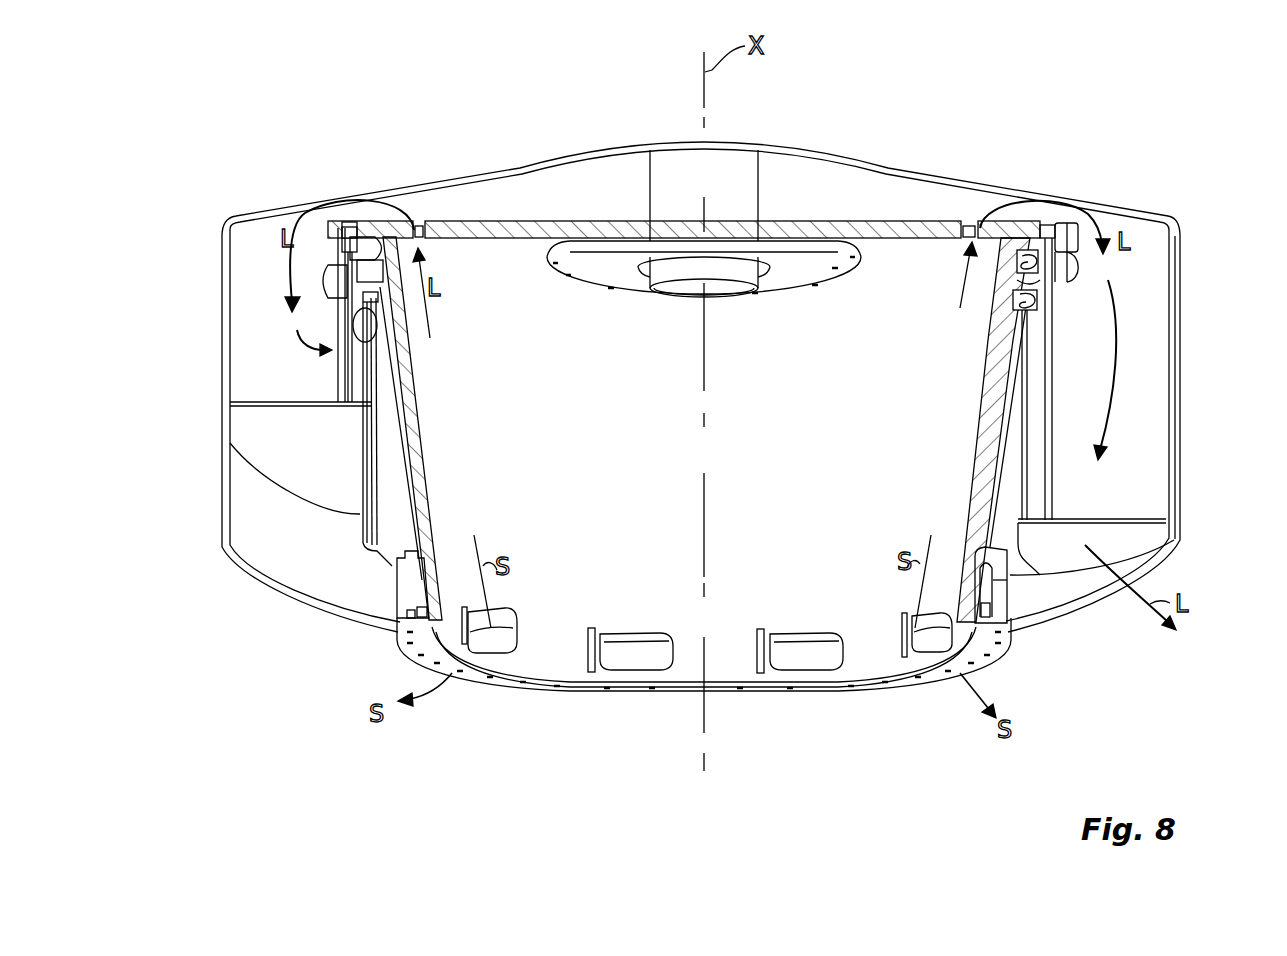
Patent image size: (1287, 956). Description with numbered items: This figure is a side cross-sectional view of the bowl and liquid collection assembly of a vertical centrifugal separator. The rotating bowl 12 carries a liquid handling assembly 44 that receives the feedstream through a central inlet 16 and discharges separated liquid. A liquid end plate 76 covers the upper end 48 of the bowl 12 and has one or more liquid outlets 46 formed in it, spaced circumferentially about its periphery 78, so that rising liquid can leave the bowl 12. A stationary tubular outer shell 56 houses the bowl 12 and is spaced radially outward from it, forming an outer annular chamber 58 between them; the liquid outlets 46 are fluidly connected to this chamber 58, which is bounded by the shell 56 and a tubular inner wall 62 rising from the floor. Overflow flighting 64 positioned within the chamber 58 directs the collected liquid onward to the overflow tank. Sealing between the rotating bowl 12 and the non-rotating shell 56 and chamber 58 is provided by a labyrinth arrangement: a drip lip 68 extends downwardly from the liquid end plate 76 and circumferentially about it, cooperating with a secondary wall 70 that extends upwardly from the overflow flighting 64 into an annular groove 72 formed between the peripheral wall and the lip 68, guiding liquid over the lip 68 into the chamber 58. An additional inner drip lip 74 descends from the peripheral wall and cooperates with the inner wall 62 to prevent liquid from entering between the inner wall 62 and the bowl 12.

The bowl 12 is at (420, 510).
The inlet 16 is at (750, 147).
The liquid handling assembly 44 is at (876, 160).
The liquid outlets 46 is at (420, 224).
The upper end 48 is at (1028, 258).
The outer shell 56 is at (1180, 382).
The outer annular chamber 58 is at (280, 381).
The inner wall 62 is at (1030, 462).
The overflow flighting 64 is at (322, 446).
The drip lip 68 is at (1070, 225).
The secondary wall 70 is at (1060, 497).
The annular groove 72 is at (1037, 305).
The inner drip lip 74 is at (1035, 300).
The liquid end plate 76 is at (892, 214).
The periphery 78 is at (386, 228).